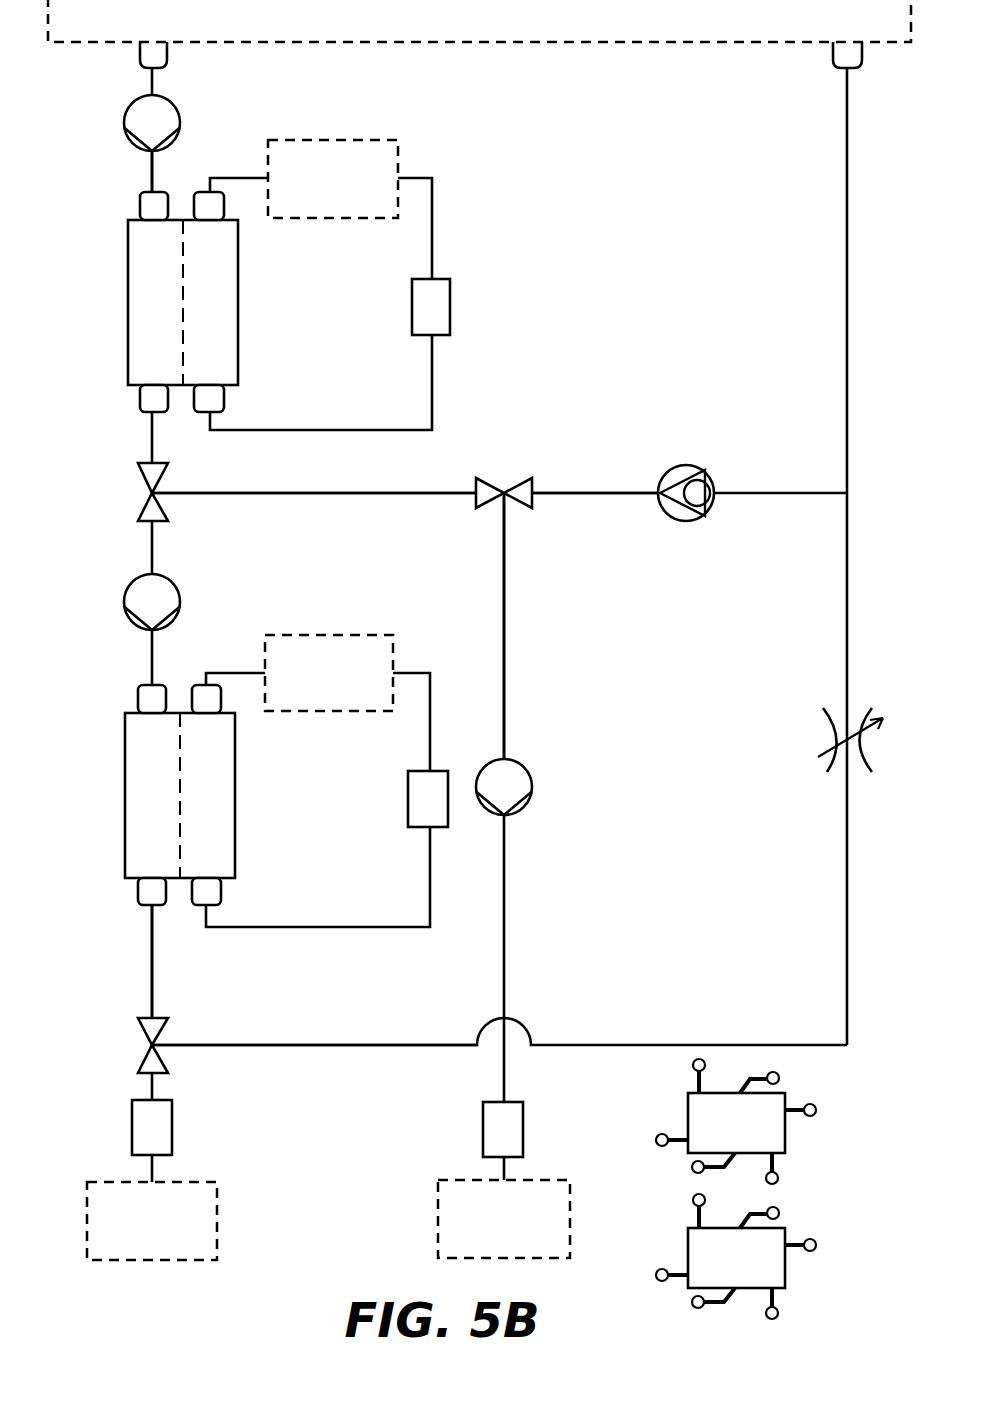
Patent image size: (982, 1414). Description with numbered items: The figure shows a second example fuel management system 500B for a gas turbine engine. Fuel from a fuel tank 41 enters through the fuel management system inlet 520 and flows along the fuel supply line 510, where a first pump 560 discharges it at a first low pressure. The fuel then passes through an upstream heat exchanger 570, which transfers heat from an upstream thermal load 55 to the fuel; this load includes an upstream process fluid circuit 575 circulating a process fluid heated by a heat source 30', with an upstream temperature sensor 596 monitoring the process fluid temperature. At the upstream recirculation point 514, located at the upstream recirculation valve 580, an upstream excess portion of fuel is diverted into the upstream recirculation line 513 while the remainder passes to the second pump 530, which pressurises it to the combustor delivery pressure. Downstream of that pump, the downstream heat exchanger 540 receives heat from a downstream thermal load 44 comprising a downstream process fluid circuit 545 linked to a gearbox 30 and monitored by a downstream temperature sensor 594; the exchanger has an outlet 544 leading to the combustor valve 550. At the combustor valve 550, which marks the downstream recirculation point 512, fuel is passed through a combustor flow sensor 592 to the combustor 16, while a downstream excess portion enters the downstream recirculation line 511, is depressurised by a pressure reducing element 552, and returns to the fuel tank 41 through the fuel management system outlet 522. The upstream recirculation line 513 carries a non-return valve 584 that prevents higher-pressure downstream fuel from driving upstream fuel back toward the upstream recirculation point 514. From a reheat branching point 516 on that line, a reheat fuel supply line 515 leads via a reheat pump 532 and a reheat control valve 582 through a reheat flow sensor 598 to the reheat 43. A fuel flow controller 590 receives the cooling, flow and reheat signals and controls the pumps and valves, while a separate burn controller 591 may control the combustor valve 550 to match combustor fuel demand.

The fuel tank 41 is at (465, 20).
The fuel management system inlet 520 is at (148, 53).
The fuel management system outlet 522 is at (843, 53).
The first pump 560 is at (180, 118).
The fuel supply line 510 is at (150, 170).
The upstream heat exchanger 570 is at (128, 325).
The upstream process fluid circuit 575 is at (320, 430).
The heat source 30' is at (333, 179).
The upstream thermal load 55 is at (389, 110).
The upstream temperature sensor 596 is at (432, 310).
The upstream recirculation point 514 is at (152, 493).
The upstream recirculation valve 580 is at (165, 470).
The upstream recirculation line 513 is at (315, 493).
The reheat control valve 582 is at (520, 478).
The reheat branching point 516 is at (510, 500).
The non-return valve 584 is at (678, 520).
The second pump 530 is at (140, 592).
The downstream heat exchanger 540 is at (125, 790).
The downstream process fluid circuit 545 is at (335, 927).
The gearbox 30 is at (329, 673).
The downstream thermal load 44 is at (382, 606).
The downstream temperature sensor 594 is at (425, 800).
The outlet of the downstream heat exchanger 544 is at (150, 893).
The reheat fuel supply line 515 is at (505, 618).
The reheat pump 532 is at (512, 812).
The pressure reducing element 552 is at (828, 770).
The combustor valve 550 is at (150, 1045).
The downstream recirculation point 512 is at (158, 1042).
The downstream recirculation line 511 is at (380, 1045).
The combustor flow sensor 592 is at (155, 1128).
The reheat flow sensor 598 is at (507, 1132).
The combustor 16 is at (135, 1237).
The reheat 43 is at (487, 1237).
The fuel flow controller 590 is at (712, 1138).
The burn controller 591 is at (712, 1273).
The fuel management system 500B is at (861, 1250).